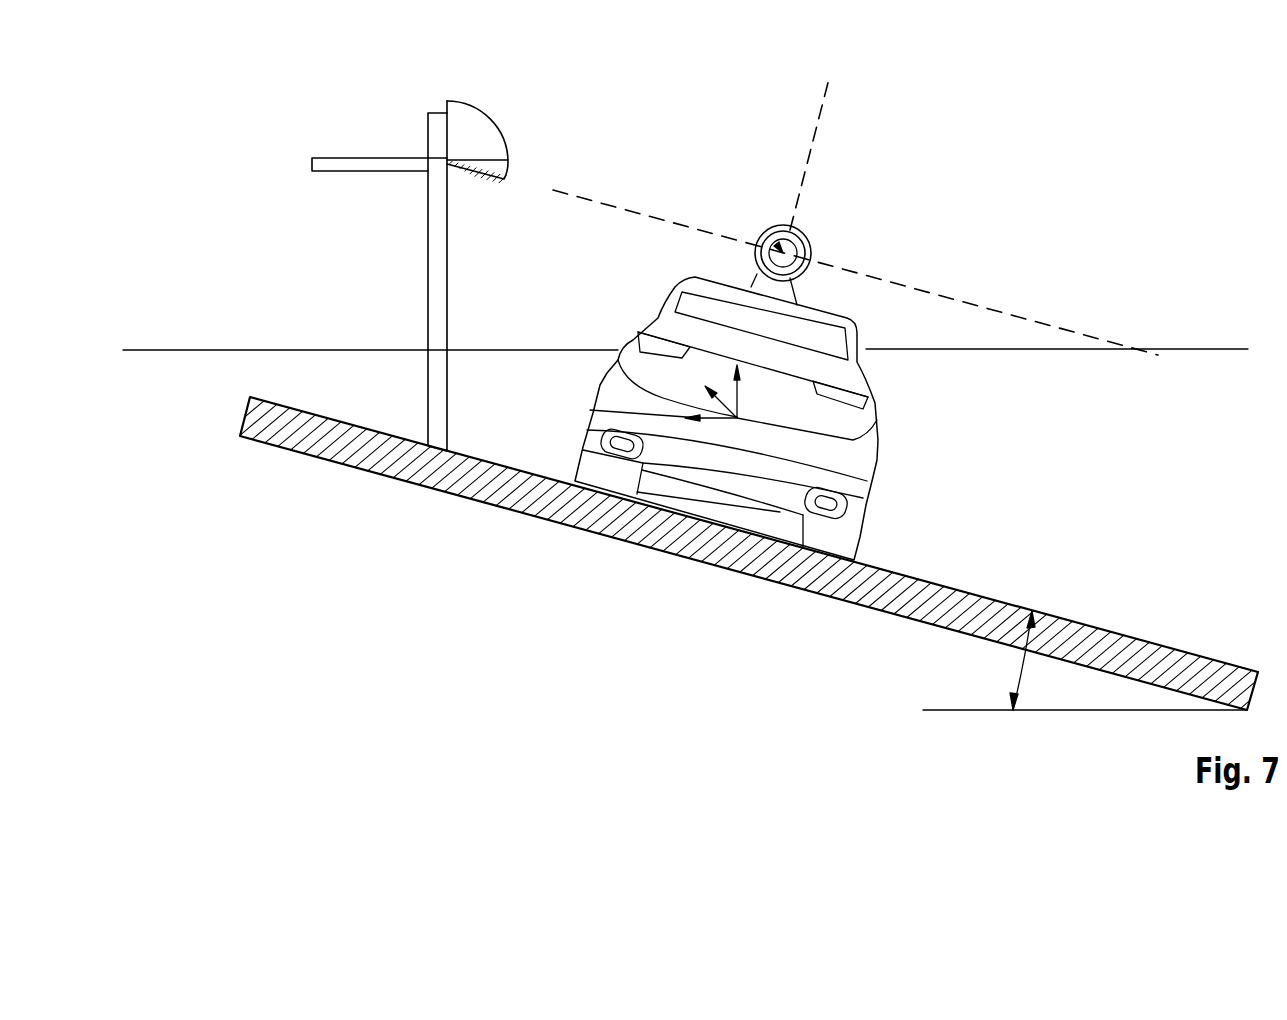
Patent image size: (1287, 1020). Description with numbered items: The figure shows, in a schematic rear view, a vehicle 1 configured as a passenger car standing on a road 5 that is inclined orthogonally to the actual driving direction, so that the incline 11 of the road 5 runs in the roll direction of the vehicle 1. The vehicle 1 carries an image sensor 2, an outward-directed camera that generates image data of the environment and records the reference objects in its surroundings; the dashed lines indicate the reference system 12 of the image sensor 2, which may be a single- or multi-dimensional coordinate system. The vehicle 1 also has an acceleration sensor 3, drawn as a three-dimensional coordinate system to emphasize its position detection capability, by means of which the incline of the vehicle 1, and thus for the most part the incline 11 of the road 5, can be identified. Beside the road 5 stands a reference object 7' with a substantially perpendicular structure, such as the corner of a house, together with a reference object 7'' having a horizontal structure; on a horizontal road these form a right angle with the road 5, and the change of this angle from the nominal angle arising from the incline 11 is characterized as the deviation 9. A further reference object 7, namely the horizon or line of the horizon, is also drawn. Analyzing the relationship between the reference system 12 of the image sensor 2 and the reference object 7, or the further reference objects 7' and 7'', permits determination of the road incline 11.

The vehicle 1 is at (862, 417).
The image sensor 2 is at (779, 229).
The acceleration sensor 3 is at (733, 420).
The road 5 is at (268, 438).
The reference object 7 is at (685, 318).
The reference object 7' is at (415, 276).
The reference object 7'' is at (354, 164).
The deviation 9 is at (506, 172).
The incline 11 is at (1016, 668).
The reference system 12 is at (633, 212).